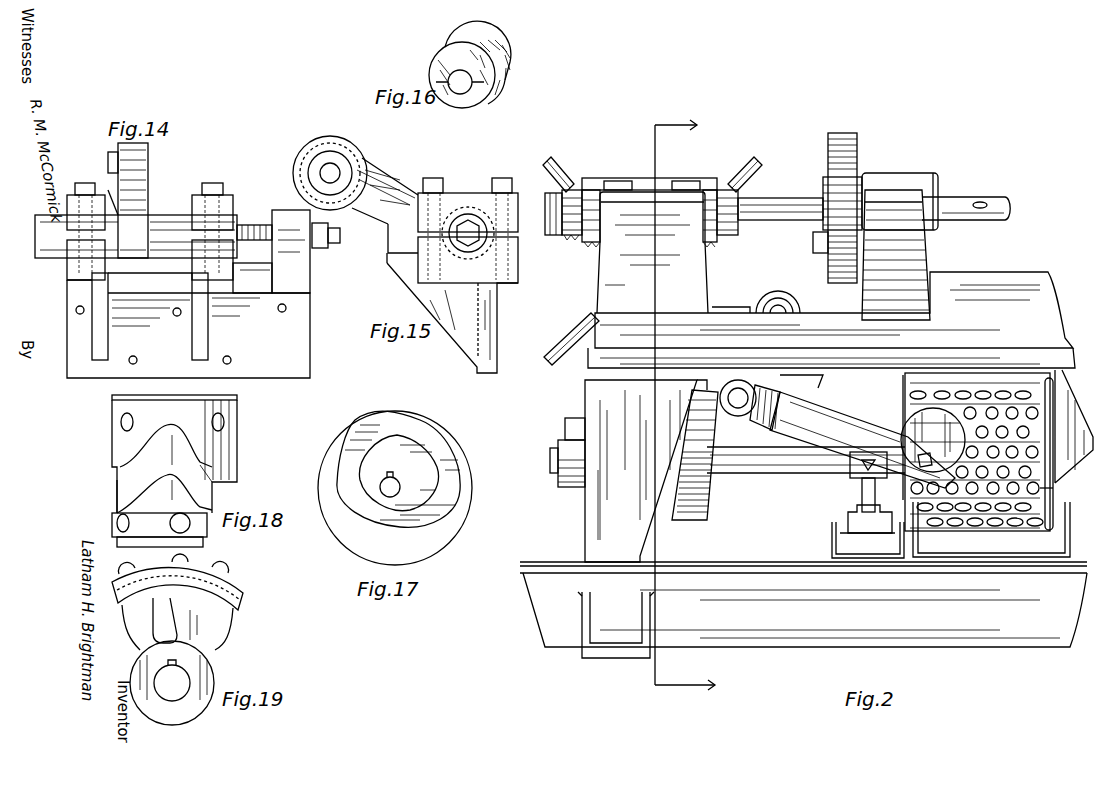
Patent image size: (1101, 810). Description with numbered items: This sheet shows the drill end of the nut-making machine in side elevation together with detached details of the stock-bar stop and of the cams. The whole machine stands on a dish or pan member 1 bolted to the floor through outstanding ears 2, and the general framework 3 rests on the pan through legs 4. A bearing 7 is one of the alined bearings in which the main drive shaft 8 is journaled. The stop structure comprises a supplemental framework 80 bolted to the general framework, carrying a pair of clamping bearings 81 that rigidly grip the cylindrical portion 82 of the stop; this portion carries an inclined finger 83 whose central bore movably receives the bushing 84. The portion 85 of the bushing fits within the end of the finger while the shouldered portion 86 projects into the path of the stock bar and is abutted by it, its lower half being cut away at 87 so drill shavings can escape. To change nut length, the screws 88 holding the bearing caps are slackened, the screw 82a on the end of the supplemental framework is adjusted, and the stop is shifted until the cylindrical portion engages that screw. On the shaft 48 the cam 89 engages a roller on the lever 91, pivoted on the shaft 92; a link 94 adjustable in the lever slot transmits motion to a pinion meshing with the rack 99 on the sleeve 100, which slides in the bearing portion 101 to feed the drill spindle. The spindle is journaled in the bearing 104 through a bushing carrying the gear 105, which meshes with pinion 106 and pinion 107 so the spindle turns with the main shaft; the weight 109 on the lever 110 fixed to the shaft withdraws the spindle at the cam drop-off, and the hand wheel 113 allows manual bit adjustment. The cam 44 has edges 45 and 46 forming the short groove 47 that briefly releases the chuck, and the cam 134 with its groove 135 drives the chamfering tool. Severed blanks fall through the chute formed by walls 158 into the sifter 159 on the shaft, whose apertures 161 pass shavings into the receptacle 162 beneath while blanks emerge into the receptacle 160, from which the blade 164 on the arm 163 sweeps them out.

In FIG. 2, the dish or pan member 1 is at (1012, 625).
In FIG. 2, the outstanding ears 2 is at (605, 652).
In FIG. 2, the general framework 3 is at (1038, 323).
In FIG. 2, the legs 4 is at (608, 515).
In FIG. 2, the bearing 7 is at (928, 140).
In FIG. 2, the main drive shaft 8 is at (943, 203).
In FIG. 18, the cam 44 is at (196, 475).
In FIG. 19, the cam 44 is at (170, 653).
In FIG. 18, the edge 45 is at (125, 441).
In FIG. 19, the edge 45 is at (240, 582).
In FIG. 18, the edge 46 is at (113, 522).
In FIG. 19, the edge 46 is at (190, 570).
In FIG. 18, the groove 47 is at (118, 483).
In FIG. 19, the groove 47 is at (172, 680).
In FIG. 2, the shaft 48 is at (790, 460).
In FIG. 14, the supplemental framework 80 is at (280, 364).
In FIG. 15, the supplemental framework 80 is at (475, 313).
In FIG. 14, the clamping bearings 81 is at (72, 205).
In FIG. 15, the clamping bearings 81 is at (465, 198).
In FIG. 14, the cylindrical portion 82 is at (168, 222).
In FIG. 14, the screw 82a is at (256, 224).
In FIG. 15, the screw 82a is at (470, 210).
In FIG. 14, the inclined finger 83 is at (142, 160).
In FIG. 15, the inclined finger 83 is at (385, 190).
In FIG. 15, the bushing 84 is at (345, 165).
In FIG. 16, the bushing 84 is at (503, 49).
In FIG. 15, the portion of bushing 85 is at (335, 165).
In FIG. 16, the portion of bushing 85 is at (507, 62).
In FIG. 14, the shouldered portion 86 is at (110, 157).
In FIG. 15, the shouldered portion 86 is at (308, 150).
In FIG. 16, the shouldered portion 86 is at (456, 52).
In FIG. 14, the cut away portion 87 is at (112, 185).
In FIG. 16, the cut away portion 87 is at (430, 85).
In FIG. 14, the screws 88 is at (80, 185).
In FIG. 15, the screws 88 is at (434, 180).
In FIG. 2, the cam 89 is at (688, 512).
In FIG. 2, the lever 91 is at (772, 294).
In FIG. 2, the shaft 92 is at (745, 408).
In FIG. 2, the link 94 is at (735, 306).
In FIG. 2, the rack 99 is at (572, 240).
In FIG. 2, the sleeve 100 is at (572, 210).
In FIG. 2, the bearing portion 101 is at (593, 183).
In FIG. 2, the bearing 104 is at (918, 180).
In FIG. 2, the gear 105 is at (845, 147).
In FIG. 2, the pinion 106 is at (842, 253).
In FIG. 2, the pinion 107 is at (843, 195).
In FIG. 2, the weight 109 is at (918, 417).
In FIG. 2, the lever 110 is at (906, 440).
In FIG. 2, the hand wheel 113 is at (748, 175).
In FIG. 17, the cam 134 is at (375, 542).
In FIG. 17, the groove 135 is at (372, 518).
In FIG. 2, the chute walls 158 is at (1075, 410).
In FIG. 2, the sifter 159 is at (972, 403).
In FIG. 2, the receptacle 160 is at (832, 549).
In FIG. 2, the apertures 161 is at (1053, 489).
In FIG. 2, the receptacle 162 is at (1068, 541).
In FIG. 2, the arm 163 is at (862, 497).
In FIG. 2, the blade 164 is at (848, 522).